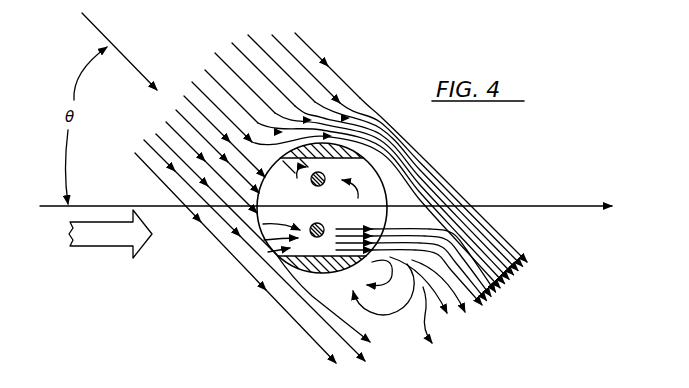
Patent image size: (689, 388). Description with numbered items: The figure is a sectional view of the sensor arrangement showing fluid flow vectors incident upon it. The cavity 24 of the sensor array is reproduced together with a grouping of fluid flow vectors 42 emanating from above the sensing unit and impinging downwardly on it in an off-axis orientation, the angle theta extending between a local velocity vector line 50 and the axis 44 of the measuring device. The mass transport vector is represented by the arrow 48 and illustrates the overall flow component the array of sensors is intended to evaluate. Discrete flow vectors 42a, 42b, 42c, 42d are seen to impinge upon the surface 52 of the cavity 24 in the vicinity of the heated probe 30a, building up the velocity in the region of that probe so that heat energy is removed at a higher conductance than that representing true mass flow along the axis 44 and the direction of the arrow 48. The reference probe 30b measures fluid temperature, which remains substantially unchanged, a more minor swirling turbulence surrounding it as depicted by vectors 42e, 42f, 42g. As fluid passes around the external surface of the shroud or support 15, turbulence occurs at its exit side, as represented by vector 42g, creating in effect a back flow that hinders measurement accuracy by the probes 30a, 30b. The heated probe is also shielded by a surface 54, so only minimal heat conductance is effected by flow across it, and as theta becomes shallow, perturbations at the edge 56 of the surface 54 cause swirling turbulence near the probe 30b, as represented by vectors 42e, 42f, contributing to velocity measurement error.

The shroud or support 15 is at (283, 291).
The cavity 24 is at (384, 220).
The heated probe 30a is at (323, 228).
The reference probe 30b is at (325, 177).
The grouping of fluid flow vectors 42 is at (219, 37).
The discrete flow vector 42a is at (157, 134).
The discrete flow vector 42b is at (165, 122).
The discrete flow vector 42c is at (175, 110).
The discrete flow vector 42d is at (184, 95).
The swirling turbulence vector 42e is at (345, 196).
The swirling turbulence vector 42f is at (304, 189).
The turbulence vector 42g is at (412, 164).
The axis 44 is at (532, 206).
The mass transport vector arrow 48 is at (100, 234).
The local velocity vector line 50 is at (100, 27).
The surface of cavity 52 is at (278, 258).
The shielding surface 54 is at (381, 133).
The edge of surface 56 is at (271, 138).